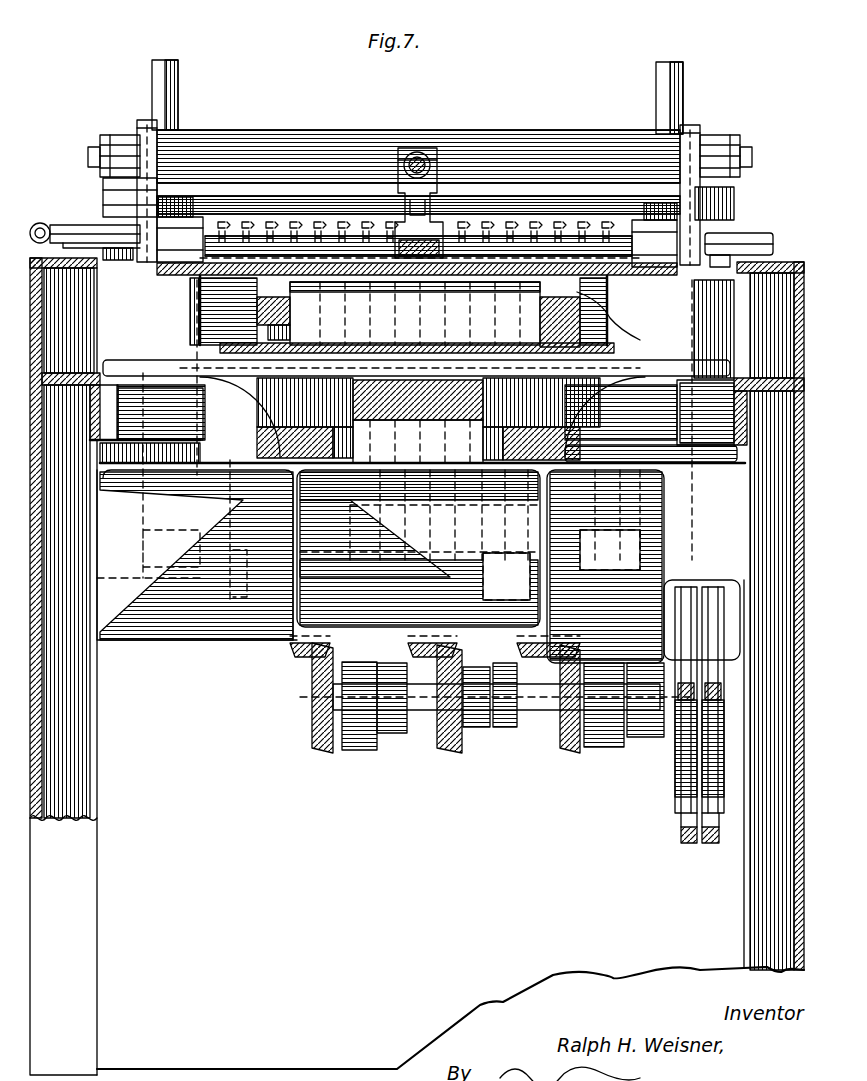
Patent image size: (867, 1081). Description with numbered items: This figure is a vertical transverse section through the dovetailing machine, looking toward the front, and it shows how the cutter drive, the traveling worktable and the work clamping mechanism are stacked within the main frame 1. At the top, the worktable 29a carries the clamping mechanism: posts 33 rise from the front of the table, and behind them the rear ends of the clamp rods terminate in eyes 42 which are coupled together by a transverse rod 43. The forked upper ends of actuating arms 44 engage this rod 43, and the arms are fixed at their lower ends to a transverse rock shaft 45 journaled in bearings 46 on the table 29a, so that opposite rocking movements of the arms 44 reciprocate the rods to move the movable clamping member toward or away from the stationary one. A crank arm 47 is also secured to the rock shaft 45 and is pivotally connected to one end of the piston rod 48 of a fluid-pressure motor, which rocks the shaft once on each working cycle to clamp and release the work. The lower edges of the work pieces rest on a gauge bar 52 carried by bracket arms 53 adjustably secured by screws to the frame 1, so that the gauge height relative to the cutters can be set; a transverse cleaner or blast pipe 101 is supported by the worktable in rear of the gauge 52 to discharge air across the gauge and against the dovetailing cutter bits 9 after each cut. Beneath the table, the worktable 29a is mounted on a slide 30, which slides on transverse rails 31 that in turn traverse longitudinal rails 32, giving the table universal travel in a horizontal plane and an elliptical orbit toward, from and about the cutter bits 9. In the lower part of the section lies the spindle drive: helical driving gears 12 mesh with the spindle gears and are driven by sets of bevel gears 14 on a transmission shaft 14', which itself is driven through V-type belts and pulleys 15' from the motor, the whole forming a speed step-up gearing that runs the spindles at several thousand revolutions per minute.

The main frame 1 is at (797, 266).
The dovetailing cutter bits 9 is at (518, 226).
The helical driving gears 12 is at (400, 417).
The bevel gears 14 is at (495, 711).
The transmission shaft 14' is at (553, 699).
The V-type belts and pulleys 15' is at (677, 715).
The worktable 29a is at (577, 290).
The slide 30 is at (594, 412).
The transverse rails 31 is at (707, 365).
The longitudinal rails 32 is at (200, 312).
The posts 33 is at (160, 70).
The eyes 42 is at (120, 143).
The transverse rod 43 is at (517, 153).
The actuating arms 44 is at (140, 123).
The transverse rock shaft 45 is at (610, 237).
The bearings 46 is at (183, 233).
The crank arm 47 is at (400, 197).
The piston rod 48 is at (415, 153).
The gauge bar 52 is at (760, 237).
The bracket arms 53 is at (724, 258).
The cleaner or blast pipe 101 is at (78, 233).